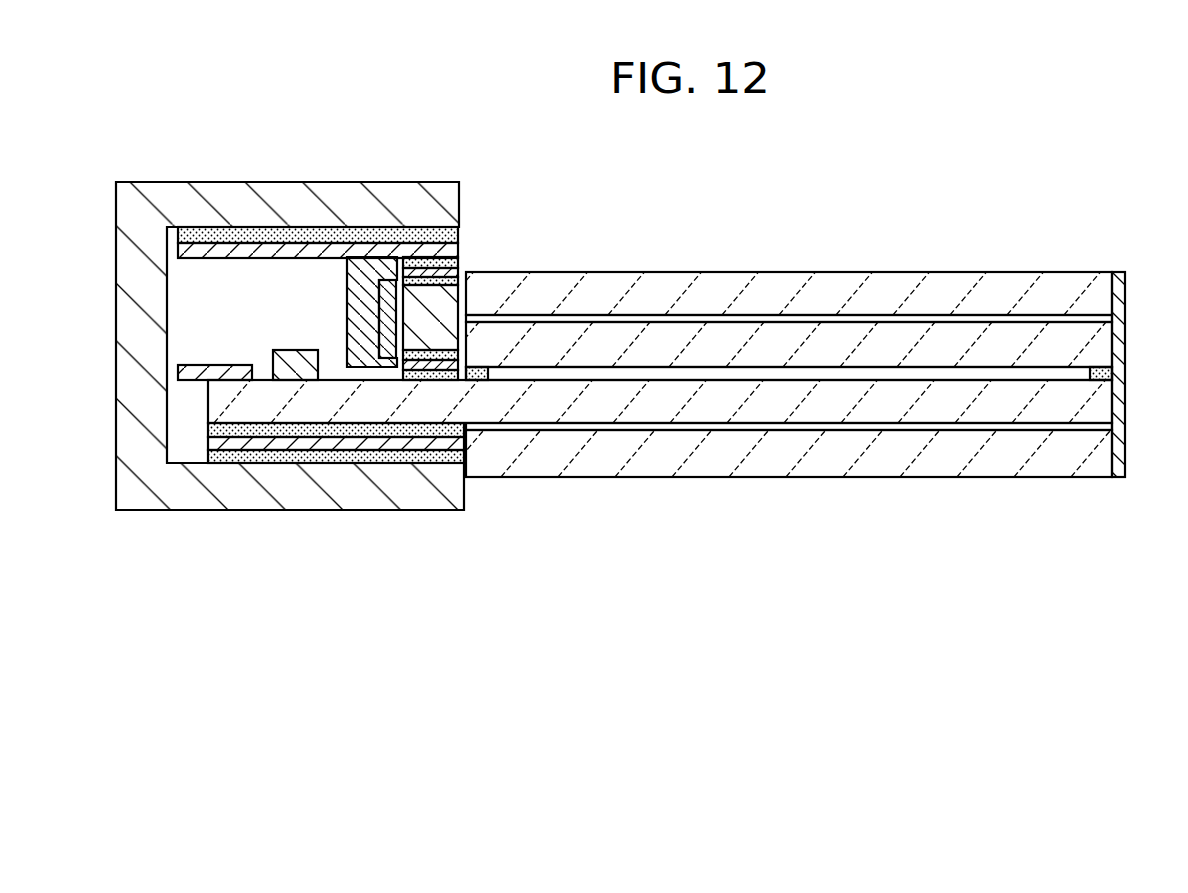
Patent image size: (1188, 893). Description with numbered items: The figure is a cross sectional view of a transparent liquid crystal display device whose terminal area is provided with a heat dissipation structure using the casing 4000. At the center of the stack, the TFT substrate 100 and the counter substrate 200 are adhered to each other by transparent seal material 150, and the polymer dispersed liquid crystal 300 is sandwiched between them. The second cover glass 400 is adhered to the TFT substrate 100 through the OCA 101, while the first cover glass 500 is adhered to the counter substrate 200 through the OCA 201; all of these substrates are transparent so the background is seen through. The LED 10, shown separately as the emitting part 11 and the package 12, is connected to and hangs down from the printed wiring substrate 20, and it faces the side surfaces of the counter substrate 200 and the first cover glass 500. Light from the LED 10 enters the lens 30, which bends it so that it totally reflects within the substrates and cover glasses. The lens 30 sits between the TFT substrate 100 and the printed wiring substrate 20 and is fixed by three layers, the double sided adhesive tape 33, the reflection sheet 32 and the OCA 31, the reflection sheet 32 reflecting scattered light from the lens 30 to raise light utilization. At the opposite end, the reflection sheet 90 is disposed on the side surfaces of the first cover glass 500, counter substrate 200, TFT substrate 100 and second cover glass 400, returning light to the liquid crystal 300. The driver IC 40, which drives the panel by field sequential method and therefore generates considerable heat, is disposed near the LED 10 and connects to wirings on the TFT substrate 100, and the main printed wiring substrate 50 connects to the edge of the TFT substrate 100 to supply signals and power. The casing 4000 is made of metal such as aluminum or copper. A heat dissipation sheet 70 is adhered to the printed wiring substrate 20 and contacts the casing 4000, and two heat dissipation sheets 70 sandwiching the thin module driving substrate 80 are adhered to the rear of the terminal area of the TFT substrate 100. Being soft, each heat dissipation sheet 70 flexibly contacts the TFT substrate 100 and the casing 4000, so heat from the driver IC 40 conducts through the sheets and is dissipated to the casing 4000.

The casing 4000 is at (201, 182).
The LED 10 is at (350, 225).
The package 12 is at (362, 260).
The emitting part 11 is at (388, 278).
The OCA 31 is at (413, 257).
The reflection sheet 32 is at (430, 270).
The double sided adhesive tape 33 is at (448, 280).
The lens 30 is at (481, 254).
The printed wiring substrate 20 is at (258, 258).
The heat dissipation sheet 70 is at (322, 241).
The main printed wiring substrate 50 is at (215, 364).
The driver IC 40 is at (297, 350).
The module driving substrate 80 is at (340, 441).
The TFT substrate 100 is at (1100, 402).
The OCA 101 is at (1105, 429).
The second cover glass 400 is at (1105, 452).
The first cover glass 500 is at (1095, 297).
The OCA 201 is at (1107, 318).
The counter substrate 200 is at (1103, 345).
The seal material 150 is at (1105, 373).
The polymer dispersed liquid crystal 300 is at (827, 291).
The reflection sheet 90 is at (1119, 272).